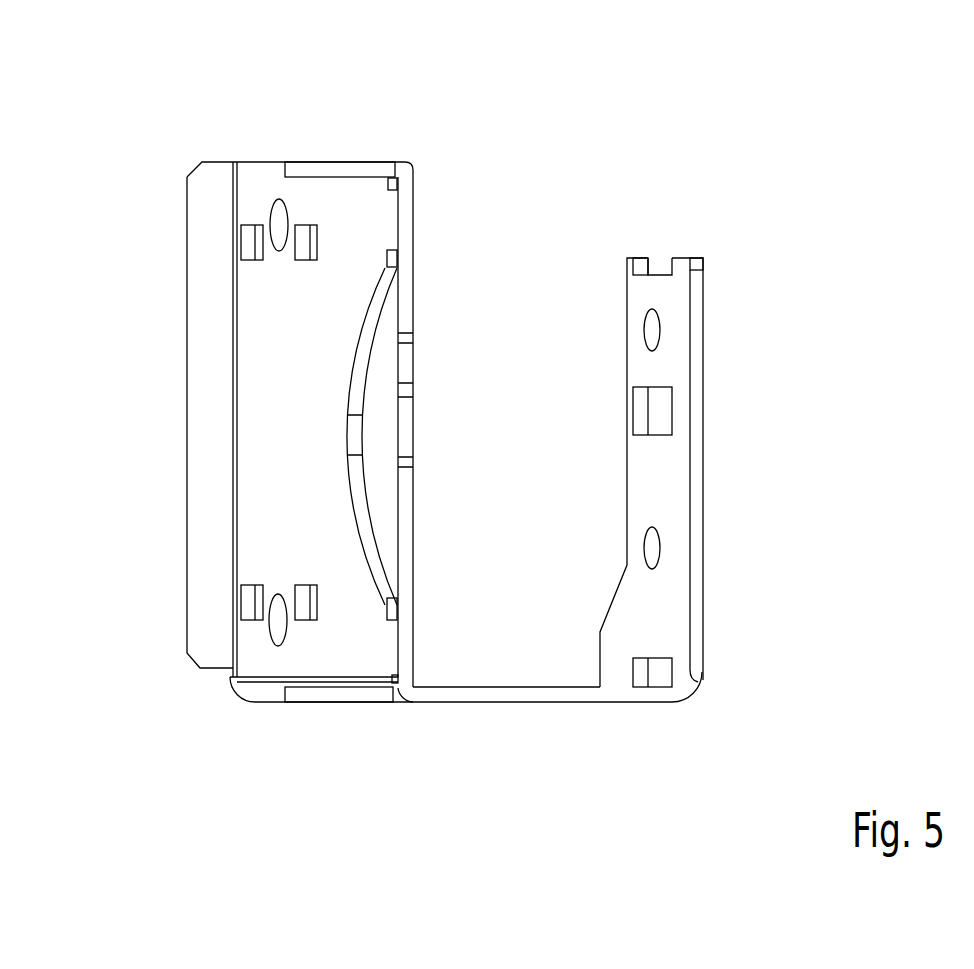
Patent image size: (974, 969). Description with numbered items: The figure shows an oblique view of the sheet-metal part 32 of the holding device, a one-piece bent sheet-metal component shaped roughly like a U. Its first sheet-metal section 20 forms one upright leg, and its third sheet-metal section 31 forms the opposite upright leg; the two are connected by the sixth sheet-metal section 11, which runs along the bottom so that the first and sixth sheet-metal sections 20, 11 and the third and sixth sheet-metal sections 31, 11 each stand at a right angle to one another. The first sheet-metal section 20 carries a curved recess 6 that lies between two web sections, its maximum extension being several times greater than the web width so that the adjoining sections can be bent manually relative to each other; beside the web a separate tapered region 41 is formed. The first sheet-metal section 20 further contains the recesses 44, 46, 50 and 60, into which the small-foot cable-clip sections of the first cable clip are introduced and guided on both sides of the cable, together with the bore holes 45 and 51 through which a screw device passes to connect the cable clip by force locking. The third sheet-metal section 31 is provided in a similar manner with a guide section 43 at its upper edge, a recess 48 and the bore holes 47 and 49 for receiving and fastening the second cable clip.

The recess 6 is at (352, 323).
The sixth sheet-metal section 11 is at (530, 693).
The first sheet-metal section 20 is at (295, 438).
The third sheet-metal section 31 is at (667, 487).
The sheet-metal part 32 is at (831, 135).
The tapered region 41 is at (385, 258).
The guide section 43 is at (660, 262).
The recess 44 is at (318, 222).
The bore hole 45 is at (275, 198).
The recess 46 is at (238, 240).
The bore hole 47 is at (662, 330).
The recess 48 is at (675, 413).
The bore hole 49 is at (662, 550).
The recess 50 is at (238, 612).
The bore hole 51 is at (272, 638).
The recess 60 is at (310, 625).